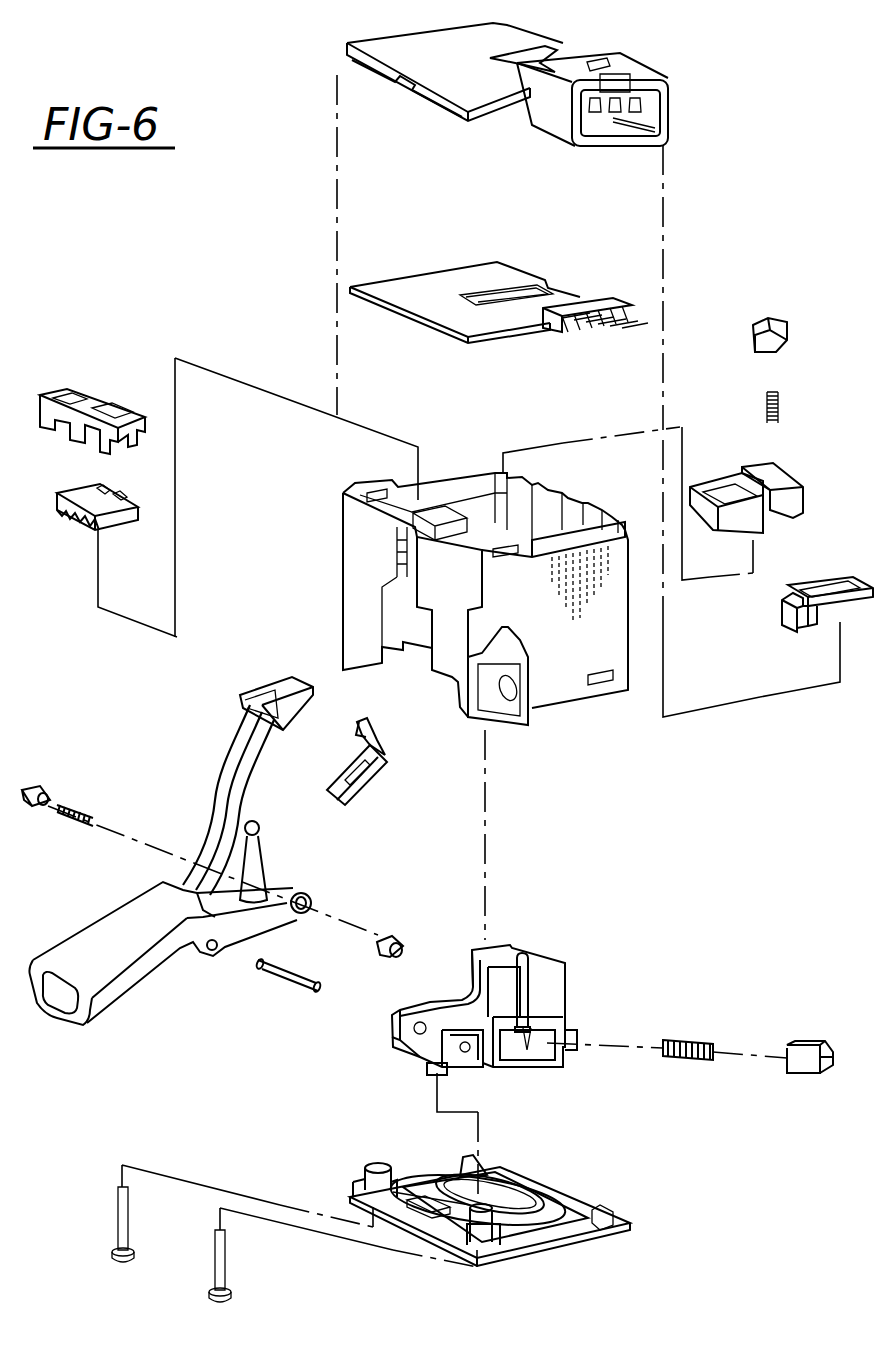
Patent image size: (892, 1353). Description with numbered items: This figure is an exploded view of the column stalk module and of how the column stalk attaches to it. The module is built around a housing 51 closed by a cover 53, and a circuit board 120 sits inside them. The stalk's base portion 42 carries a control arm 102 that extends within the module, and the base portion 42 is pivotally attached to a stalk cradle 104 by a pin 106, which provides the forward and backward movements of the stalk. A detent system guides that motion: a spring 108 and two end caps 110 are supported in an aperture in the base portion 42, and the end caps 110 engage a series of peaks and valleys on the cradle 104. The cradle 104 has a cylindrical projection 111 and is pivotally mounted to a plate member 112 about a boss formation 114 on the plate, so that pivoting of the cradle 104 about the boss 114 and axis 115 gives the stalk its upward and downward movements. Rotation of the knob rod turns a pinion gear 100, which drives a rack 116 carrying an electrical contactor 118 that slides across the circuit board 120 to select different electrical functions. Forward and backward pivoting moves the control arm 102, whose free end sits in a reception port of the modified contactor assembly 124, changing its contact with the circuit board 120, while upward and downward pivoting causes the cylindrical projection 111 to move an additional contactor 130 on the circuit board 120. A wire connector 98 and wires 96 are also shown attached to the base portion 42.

The cover 53 is at (510, 47).
The circuit board 120 is at (430, 287).
The housing 51 is at (557, 687).
The electrical contactor 118 is at (82, 393).
The rack 116 is at (63, 513).
The modified contactor assembly 124 is at (790, 492).
The additional contactor 130 is at (830, 597).
The wire connector 98 is at (282, 690).
The wires 96 is at (220, 747).
The end caps 110 is at (33, 787).
The spring 108 is at (78, 813).
The base portion 42 is at (137, 903).
The control arm 102 is at (267, 825).
The pin 106 is at (283, 977).
The pinion gear 100 is at (387, 780).
The stalk cradle 104 is at (455, 1010).
The cylindrical projection 111 is at (530, 1007).
The plate member 112 is at (573, 1233).
The boss formation 114 is at (513, 1190).
The axis 115 is at (483, 1163).